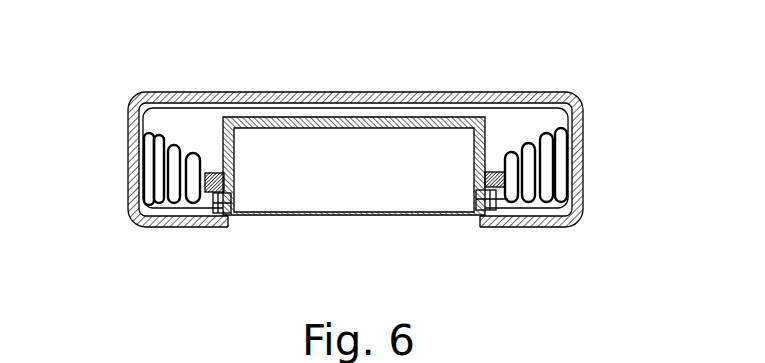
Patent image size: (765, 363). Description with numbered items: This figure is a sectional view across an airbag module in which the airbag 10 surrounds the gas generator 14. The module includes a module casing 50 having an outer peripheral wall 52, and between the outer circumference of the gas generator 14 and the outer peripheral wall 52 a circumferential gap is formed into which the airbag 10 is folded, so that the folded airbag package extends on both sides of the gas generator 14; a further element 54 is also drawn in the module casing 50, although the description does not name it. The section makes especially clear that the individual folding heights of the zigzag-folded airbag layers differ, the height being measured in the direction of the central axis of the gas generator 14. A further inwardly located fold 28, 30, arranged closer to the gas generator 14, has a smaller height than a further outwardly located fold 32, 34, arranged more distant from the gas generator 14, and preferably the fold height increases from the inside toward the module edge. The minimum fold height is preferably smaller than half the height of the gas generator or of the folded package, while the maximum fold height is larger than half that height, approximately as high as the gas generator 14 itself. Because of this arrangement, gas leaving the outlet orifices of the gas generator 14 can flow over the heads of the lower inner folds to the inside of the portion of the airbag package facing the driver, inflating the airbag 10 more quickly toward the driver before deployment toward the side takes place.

The airbag 10 is at (178, 147).
The gas generator 14 is at (368, 195).
The inwardly located fold 28 is at (130, 185).
The inwardly located fold 30 is at (505, 152).
The outwardly located fold 32 is at (130, 133).
The outwardly located fold 34 is at (582, 158).
The module casing 50 is at (365, 91).
The outer peripheral wall 52 is at (582, 176).
The inner liner 54 is at (505, 120).